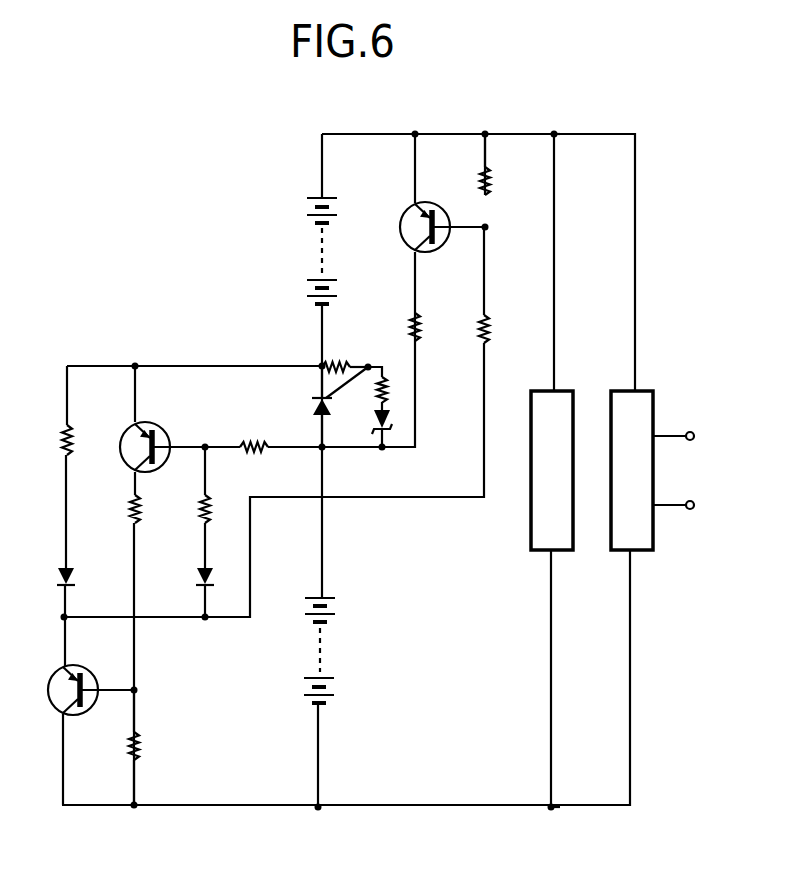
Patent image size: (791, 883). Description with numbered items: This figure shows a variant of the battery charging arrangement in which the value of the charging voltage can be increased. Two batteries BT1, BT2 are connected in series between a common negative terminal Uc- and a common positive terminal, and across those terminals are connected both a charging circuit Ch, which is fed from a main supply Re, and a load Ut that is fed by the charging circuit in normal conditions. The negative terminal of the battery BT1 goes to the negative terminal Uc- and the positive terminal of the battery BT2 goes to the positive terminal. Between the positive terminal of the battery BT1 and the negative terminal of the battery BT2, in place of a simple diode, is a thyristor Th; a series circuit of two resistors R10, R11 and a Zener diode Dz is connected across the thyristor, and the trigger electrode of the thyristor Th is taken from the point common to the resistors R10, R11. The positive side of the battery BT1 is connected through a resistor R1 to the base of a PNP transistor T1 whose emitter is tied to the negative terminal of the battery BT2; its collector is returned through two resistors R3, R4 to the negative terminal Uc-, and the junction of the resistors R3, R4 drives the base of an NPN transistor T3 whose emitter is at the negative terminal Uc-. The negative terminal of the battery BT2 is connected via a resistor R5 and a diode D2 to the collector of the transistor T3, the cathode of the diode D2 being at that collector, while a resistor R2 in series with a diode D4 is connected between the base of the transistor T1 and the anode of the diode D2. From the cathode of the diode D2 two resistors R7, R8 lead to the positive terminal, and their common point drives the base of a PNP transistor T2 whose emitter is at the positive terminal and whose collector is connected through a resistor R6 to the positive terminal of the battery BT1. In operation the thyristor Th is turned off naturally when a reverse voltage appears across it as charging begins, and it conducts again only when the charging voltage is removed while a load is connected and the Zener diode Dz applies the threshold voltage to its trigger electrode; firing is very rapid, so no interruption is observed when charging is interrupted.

The battery BT1 is at (334, 626).
The battery BT2 is at (311, 228).
The PNP transistor T1 is at (150, 430).
The PNP transistor T2 is at (408, 207).
The NPN transistor T3 is at (57, 684).
The resistor R1 is at (250, 438).
The resistor R2 is at (200, 520).
The resistor R3 is at (131, 520).
The resistor R4 is at (139, 758).
The resistor R5 is at (62, 446).
The resistor R6 is at (411, 330).
The resistor R7 is at (490, 172).
The resistor R8 is at (489, 324).
The resistor R10 is at (345, 362).
The resistor R11 is at (390, 392).
The diode D2 is at (60, 580).
The diode D4 is at (200, 580).
The Zener diode Dz is at (378, 438).
The thyristor Th is at (316, 412).
The load Ut is at (540, 517).
The charging circuit Ch is at (633, 517).
The main supply Re is at (673, 470).
The negative terminal Uc- is at (529, 826).